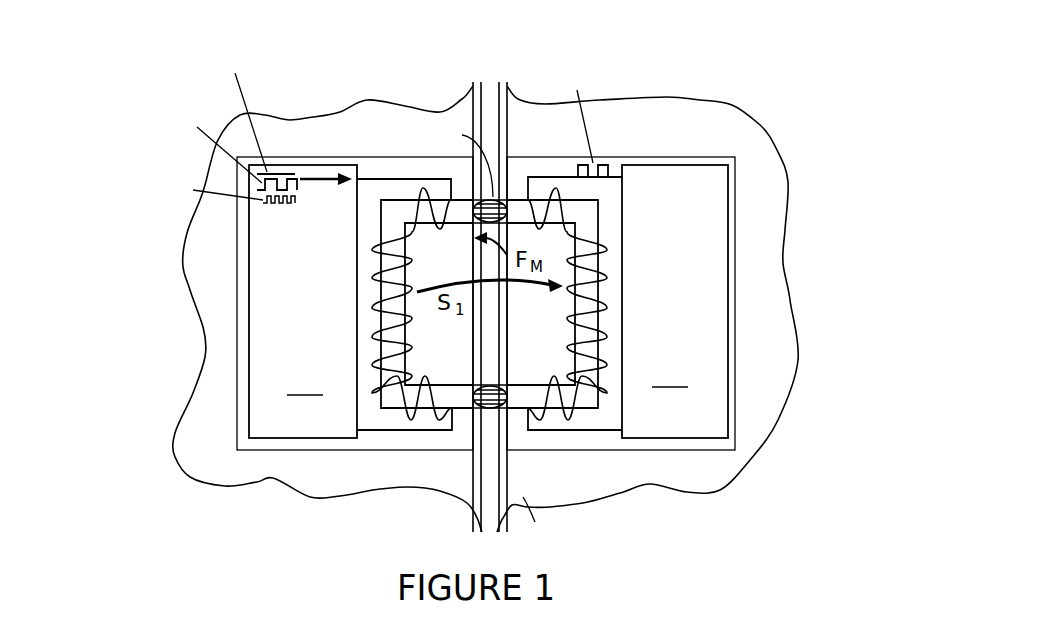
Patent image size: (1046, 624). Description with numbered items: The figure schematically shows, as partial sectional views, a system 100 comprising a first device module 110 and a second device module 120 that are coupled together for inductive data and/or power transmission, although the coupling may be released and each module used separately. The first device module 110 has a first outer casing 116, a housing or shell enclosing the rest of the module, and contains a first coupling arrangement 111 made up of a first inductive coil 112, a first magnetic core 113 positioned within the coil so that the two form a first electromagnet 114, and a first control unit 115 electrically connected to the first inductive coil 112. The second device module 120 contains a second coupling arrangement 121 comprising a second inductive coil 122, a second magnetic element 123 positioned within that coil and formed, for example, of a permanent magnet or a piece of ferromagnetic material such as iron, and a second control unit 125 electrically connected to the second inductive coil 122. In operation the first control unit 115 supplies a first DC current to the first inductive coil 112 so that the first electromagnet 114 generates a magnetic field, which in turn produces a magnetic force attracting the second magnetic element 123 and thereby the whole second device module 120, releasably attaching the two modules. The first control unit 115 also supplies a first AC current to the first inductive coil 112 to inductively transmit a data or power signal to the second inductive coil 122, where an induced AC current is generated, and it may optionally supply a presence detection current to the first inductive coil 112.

The system 100 is at (646, 71).
The first device module 110 is at (316, 133).
The first coupling arrangement 111 is at (237, 281).
The first inductive coil 112 is at (428, 413).
The first magnetic core 113 is at (400, 397).
The first electromagnet 114 is at (318, 505).
The first control unit 115 is at (237, 241).
The first outer casing 116 is at (475, 497).
The second device module 120 is at (718, 127).
The second coupling arrangement 121 is at (735, 220).
The second inductive coil 122 is at (601, 394).
The second magnetic element 123 is at (567, 400).
The second control unit 125 is at (628, 250).